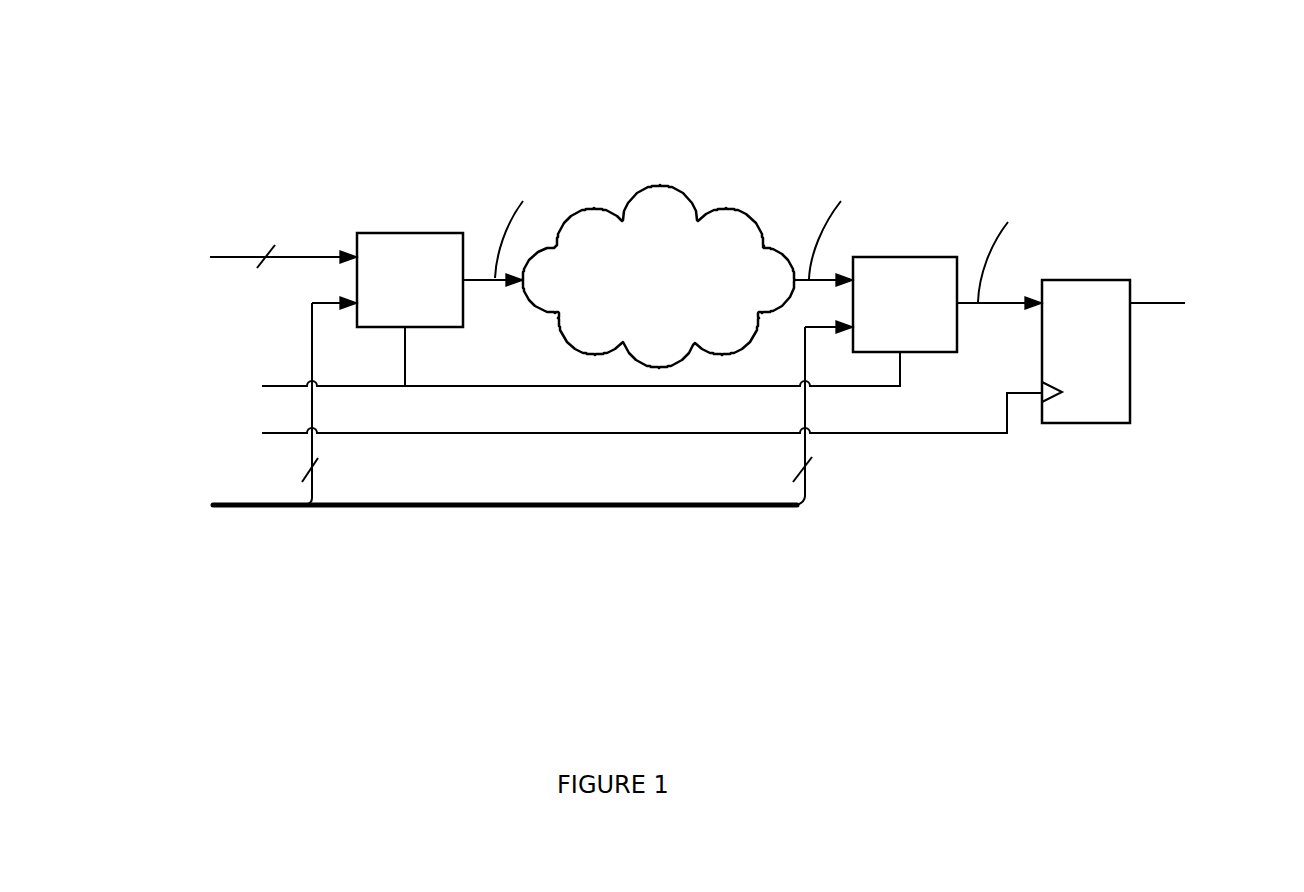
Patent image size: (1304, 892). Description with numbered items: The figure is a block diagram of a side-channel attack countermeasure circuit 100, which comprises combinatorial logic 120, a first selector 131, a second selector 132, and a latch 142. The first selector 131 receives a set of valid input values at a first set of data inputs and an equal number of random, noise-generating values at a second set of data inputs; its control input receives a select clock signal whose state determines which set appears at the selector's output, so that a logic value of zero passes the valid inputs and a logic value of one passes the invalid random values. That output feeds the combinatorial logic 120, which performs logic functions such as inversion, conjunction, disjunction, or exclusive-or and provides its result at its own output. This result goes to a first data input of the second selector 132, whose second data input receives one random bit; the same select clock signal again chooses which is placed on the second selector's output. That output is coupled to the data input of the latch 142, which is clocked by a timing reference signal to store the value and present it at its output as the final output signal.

The countermeasure circuit 100 is at (122, 98).
The combinatorial logic 120 is at (679, 342).
The selector 131 is at (410, 233).
The selector 132 is at (925, 257).
The latch 142 is at (1095, 280).